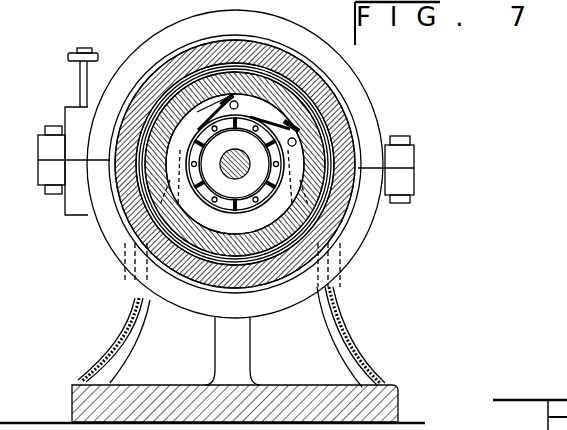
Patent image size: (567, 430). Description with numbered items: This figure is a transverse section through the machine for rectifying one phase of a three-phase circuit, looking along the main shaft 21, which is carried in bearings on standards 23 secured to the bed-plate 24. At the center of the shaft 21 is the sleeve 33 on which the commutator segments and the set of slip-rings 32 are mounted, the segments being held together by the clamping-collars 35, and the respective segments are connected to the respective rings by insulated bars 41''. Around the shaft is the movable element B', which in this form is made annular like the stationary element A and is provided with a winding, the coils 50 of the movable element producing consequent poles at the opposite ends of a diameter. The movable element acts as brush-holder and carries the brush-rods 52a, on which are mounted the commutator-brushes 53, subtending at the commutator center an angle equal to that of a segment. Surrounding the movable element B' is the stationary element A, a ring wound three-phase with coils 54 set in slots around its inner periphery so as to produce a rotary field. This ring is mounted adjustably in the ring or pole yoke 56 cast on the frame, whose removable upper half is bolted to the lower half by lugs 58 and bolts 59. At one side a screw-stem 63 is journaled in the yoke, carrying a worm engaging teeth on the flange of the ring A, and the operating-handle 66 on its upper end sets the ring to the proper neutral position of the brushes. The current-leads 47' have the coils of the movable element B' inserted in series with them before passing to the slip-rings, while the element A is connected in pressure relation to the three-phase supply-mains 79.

The main shaft 21 is at (235, 164).
The standards 23 is at (256, 351).
The bed-plate 24 is at (262, 386).
The set of slip-rings 32 is at (172, 177).
The sleeve 33 is at (246, 164).
The clamping-collars 35 is at (234, 164).
The insulated bars 41'' is at (287, 183).
The current-leads 47' is at (231, 337).
The coils or windings 50 is at (232, 244).
The brush-rods 52a is at (242, 104).
The commutator-brushes 53 is at (156, 68).
The coils 54 is at (345, 118).
The ring or pole yoke 56 is at (355, 88).
The lugs 58 is at (40, 140).
The bolts 59 is at (55, 191).
The screw-stem 63 is at (80, 80).
The operating-handle 66 is at (79, 53).
The three-phase supply-mains or bus-bars 79 is at (238, 423).
The stationary element A is at (345, 225).
The movable element B' is at (235, 164).